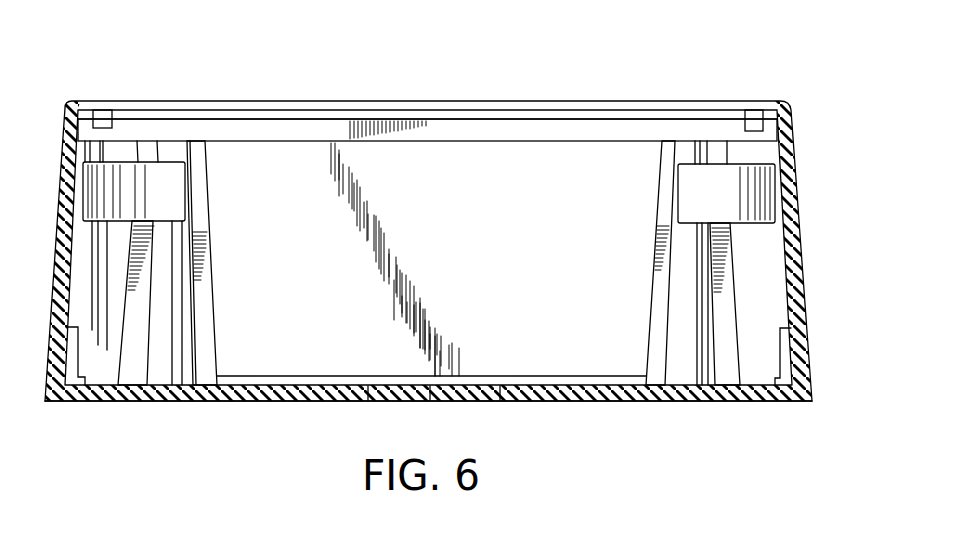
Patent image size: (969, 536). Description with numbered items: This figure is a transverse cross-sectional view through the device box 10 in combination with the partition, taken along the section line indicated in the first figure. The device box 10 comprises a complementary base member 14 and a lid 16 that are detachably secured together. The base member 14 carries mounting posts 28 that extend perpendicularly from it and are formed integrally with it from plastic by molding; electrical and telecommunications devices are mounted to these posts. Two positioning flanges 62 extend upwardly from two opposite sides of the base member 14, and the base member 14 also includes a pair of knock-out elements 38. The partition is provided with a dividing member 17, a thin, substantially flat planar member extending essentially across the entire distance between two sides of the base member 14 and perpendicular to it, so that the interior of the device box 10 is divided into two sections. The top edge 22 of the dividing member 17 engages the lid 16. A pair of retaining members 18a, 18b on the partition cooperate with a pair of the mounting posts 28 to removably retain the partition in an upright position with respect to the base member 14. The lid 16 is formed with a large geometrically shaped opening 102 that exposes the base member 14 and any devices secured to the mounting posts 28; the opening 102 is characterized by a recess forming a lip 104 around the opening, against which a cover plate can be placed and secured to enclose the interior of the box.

The device box 10 is at (657, 86).
The lid 16 is at (808, 230).
The opening 102 is at (281, 98).
The lip 104 is at (96, 108).
The top edge 22 is at (509, 117).
The mounting posts 28 is at (213, 318).
The retaining member 18a is at (172, 226).
The retaining member 18b is at (684, 232).
The dividing member 17 is at (491, 285).
The positioning flanges 62 is at (77, 326).
The base member 14 is at (328, 383).
The knock-out elements 38 is at (484, 383).